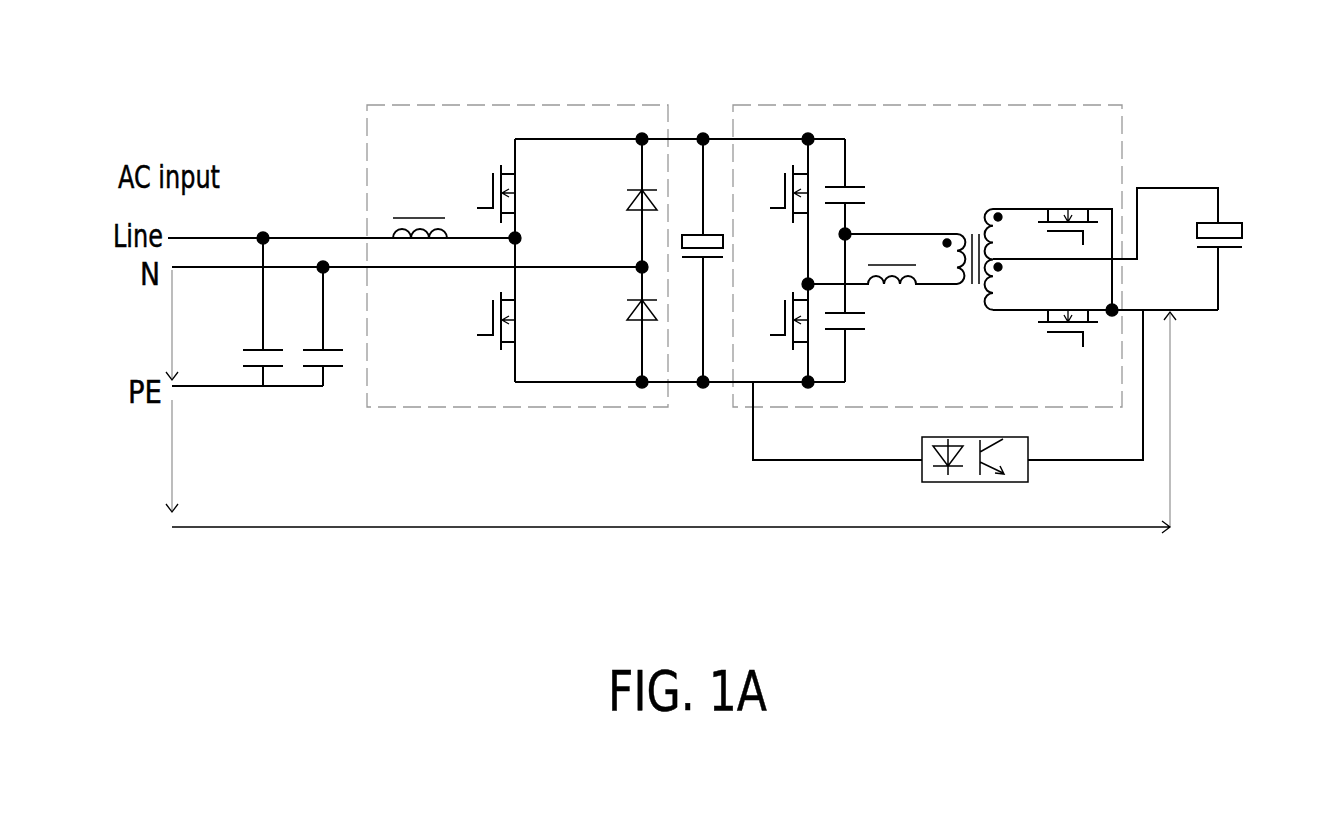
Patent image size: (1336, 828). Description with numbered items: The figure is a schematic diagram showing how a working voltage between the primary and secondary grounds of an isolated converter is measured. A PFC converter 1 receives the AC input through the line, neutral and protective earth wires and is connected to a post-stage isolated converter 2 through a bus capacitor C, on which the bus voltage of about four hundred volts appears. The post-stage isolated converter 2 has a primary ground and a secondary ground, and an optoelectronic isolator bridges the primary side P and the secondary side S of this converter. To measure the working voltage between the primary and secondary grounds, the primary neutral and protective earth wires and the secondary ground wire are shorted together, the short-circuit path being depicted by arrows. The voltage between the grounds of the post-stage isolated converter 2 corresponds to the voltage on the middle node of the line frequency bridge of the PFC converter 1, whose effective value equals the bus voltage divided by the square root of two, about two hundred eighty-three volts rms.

The PFC converter 1 is at (555, 105).
The post-stage isolated converter 2 is at (965, 105).
The bus capacitor C is at (703, 260).
The primary-side ground connection to optoelectronic isolator P is at (837, 421).
The secondary-side ground connection to optoelectronic isolator S is at (1085, 385).